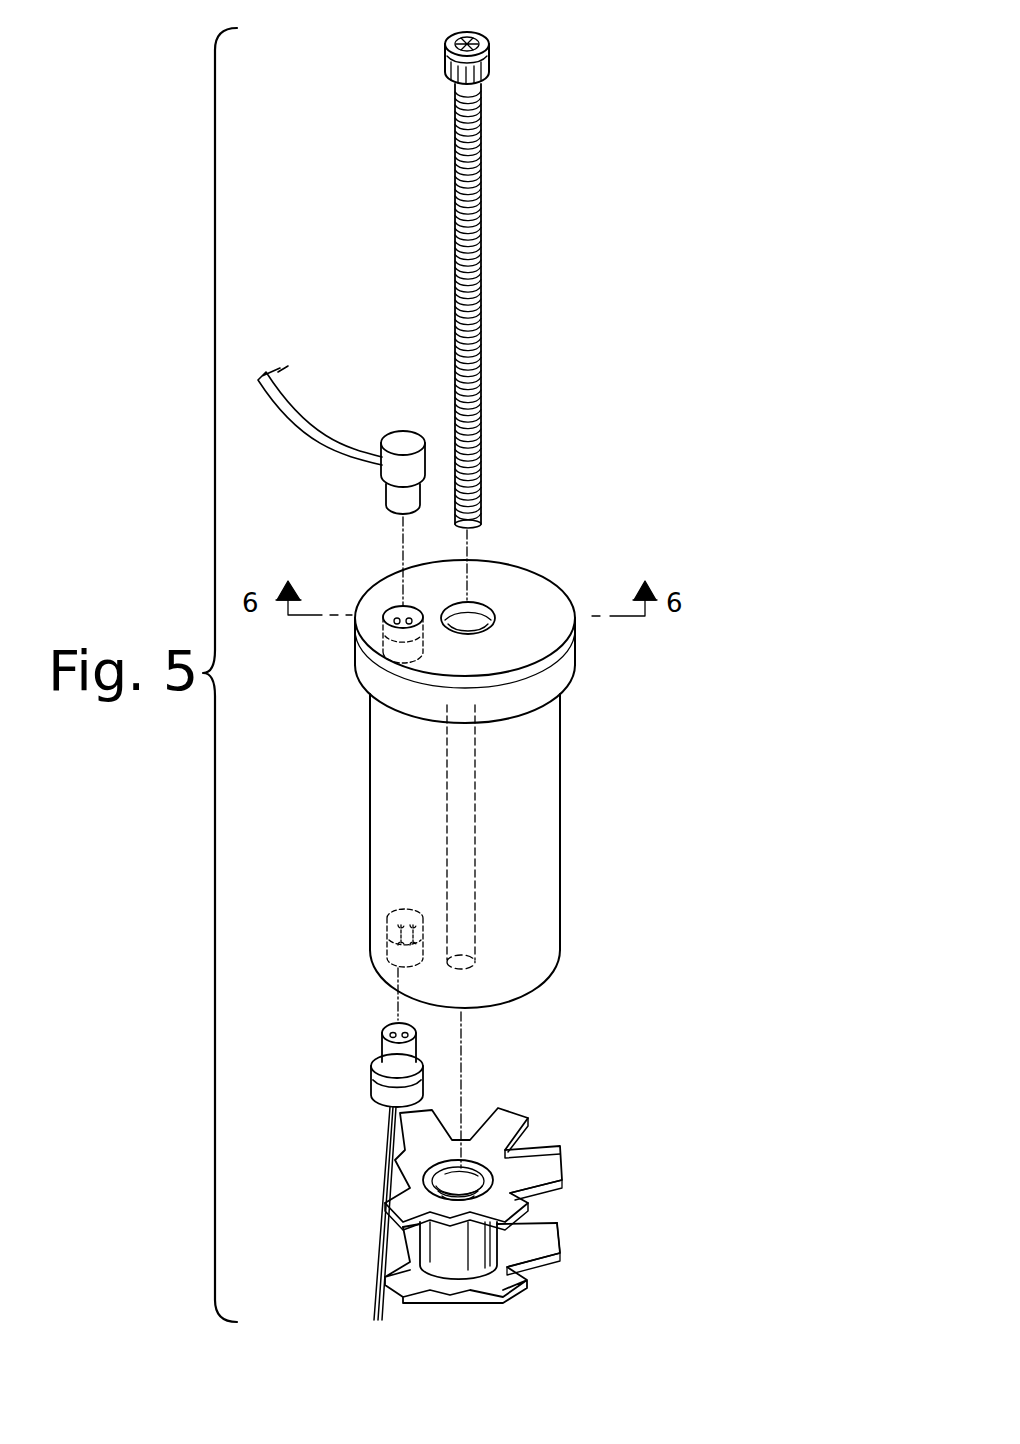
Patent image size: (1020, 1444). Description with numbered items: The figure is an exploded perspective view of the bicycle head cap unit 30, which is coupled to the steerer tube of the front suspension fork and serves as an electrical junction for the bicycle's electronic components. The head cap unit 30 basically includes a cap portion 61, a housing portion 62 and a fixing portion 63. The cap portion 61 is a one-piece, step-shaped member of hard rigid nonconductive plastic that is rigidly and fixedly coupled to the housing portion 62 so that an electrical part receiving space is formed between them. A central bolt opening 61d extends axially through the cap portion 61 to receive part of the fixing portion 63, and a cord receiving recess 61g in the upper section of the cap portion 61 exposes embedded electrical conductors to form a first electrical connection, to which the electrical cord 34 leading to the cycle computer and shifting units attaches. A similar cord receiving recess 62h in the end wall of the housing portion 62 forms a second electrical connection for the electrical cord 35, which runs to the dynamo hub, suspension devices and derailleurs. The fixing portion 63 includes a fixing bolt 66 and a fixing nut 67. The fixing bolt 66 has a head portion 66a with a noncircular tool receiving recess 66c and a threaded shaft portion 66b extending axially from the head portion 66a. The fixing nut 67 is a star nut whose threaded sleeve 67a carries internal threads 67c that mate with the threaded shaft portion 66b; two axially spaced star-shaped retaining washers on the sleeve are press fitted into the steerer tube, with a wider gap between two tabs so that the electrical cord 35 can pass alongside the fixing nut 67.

The bicycle head cap unit 30 is at (615, 805).
The electrical cord 34 is at (300, 400).
The electrical cord 35 is at (380, 1122).
The cap portion 61 is at (590, 657).
The bolt opening 61d is at (480, 605).
The cord receiving recess 61g is at (395, 606).
The housing portion 62 is at (572, 889).
The cord receiving recess 62h is at (380, 973).
The fixing portion 63 is at (565, 350).
The fixing bolt 66 is at (496, 245).
The head portion 66a is at (492, 62).
The threaded shaft portion 66b is at (486, 180).
The tool receiving recess 66c is at (478, 40).
The fixing nut 67 is at (540, 1100).
The threaded sleeve 67a is at (478, 1243).
The internal threads 67c is at (472, 1132).